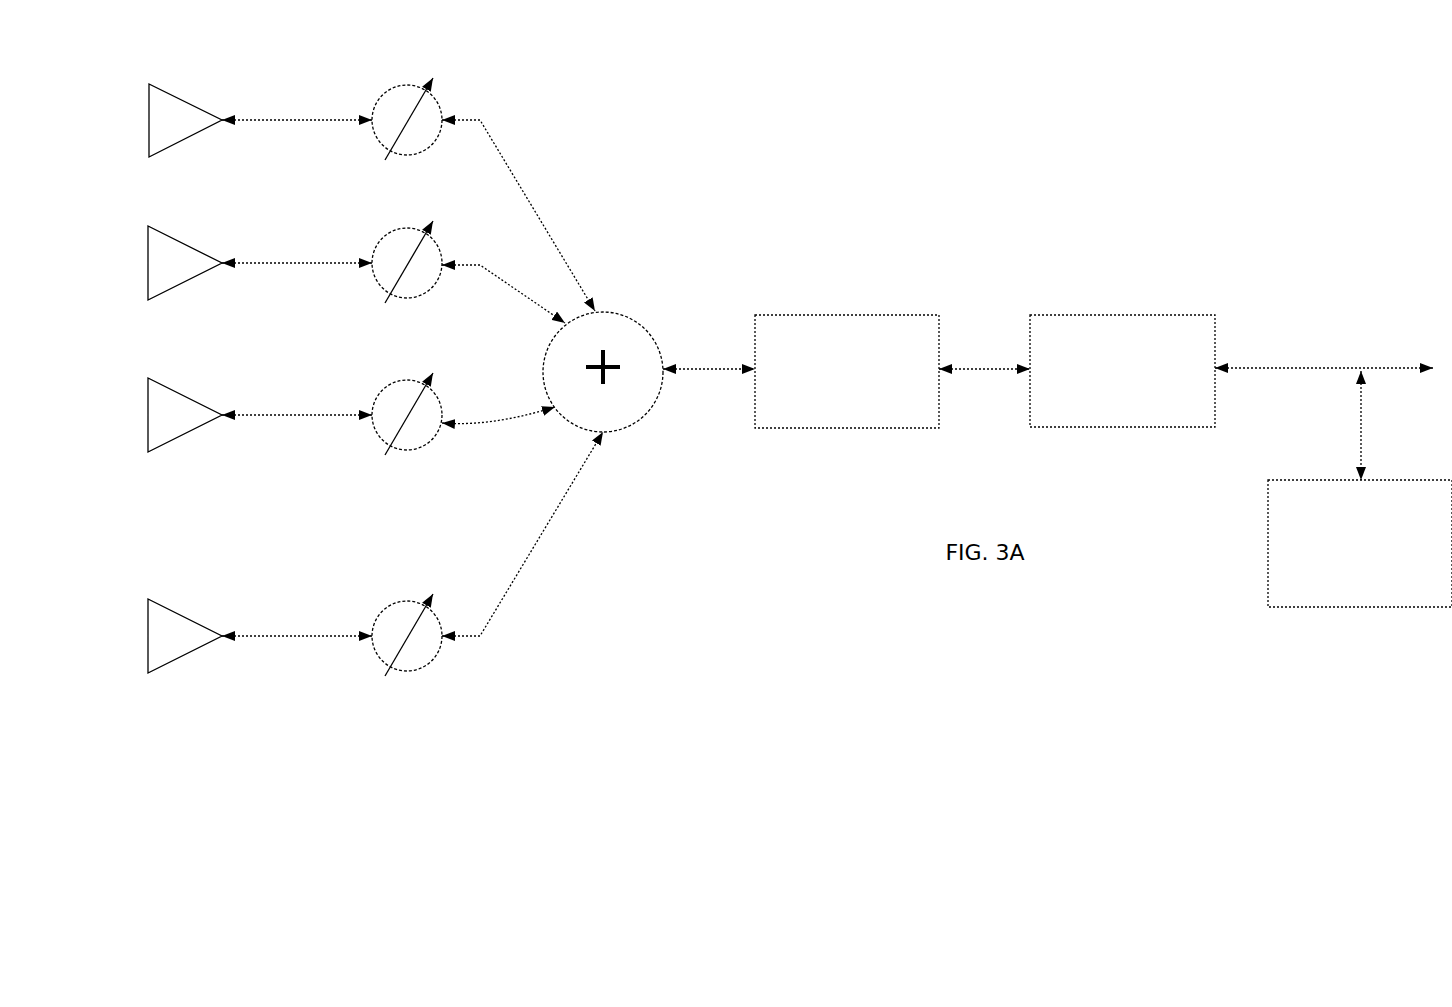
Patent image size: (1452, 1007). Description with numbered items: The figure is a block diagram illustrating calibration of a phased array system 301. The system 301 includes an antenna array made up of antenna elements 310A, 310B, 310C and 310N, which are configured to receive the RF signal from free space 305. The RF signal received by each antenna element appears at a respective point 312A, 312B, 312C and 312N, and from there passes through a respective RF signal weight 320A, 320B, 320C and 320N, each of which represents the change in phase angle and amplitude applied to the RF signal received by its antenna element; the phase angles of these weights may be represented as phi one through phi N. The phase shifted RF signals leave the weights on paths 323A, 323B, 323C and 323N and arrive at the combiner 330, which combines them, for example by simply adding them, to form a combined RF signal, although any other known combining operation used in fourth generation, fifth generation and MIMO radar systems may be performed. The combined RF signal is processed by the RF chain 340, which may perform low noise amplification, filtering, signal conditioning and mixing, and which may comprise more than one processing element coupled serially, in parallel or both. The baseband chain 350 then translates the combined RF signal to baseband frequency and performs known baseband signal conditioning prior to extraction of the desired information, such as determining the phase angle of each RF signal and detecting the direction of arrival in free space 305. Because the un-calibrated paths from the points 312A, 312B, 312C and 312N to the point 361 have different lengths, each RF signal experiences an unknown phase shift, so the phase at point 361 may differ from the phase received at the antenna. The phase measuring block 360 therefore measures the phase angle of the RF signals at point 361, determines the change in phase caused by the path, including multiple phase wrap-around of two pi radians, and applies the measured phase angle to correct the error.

The system 301 is at (1172, 122).
The free space 305 is at (92, 362).
The antenna element 310A is at (170, 95).
The antenna element 310B is at (170, 238).
The antenna element 310C is at (170, 389).
The antenna element 310N is at (170, 610).
The point 312A is at (281, 123).
The point 312B is at (278, 268).
The point 312C is at (292, 417).
The point 312N is at (288, 637).
The RF signal weight 320A is at (393, 85).
The RF signal weight 320B is at (393, 230).
The RF signal weight 320C is at (393, 382).
The RF signal weight 320N is at (393, 602).
The path 323A is at (545, 230).
The path 323B is at (527, 297).
The path 323C is at (497, 420).
The path 323N is at (532, 560).
The combiner 330 is at (617, 313).
The RF chain 340 is at (892, 371).
The baseband chain 350 is at (1122, 371).
The phase measuring block 360 is at (1360, 543).
The point 361 is at (1361, 368).